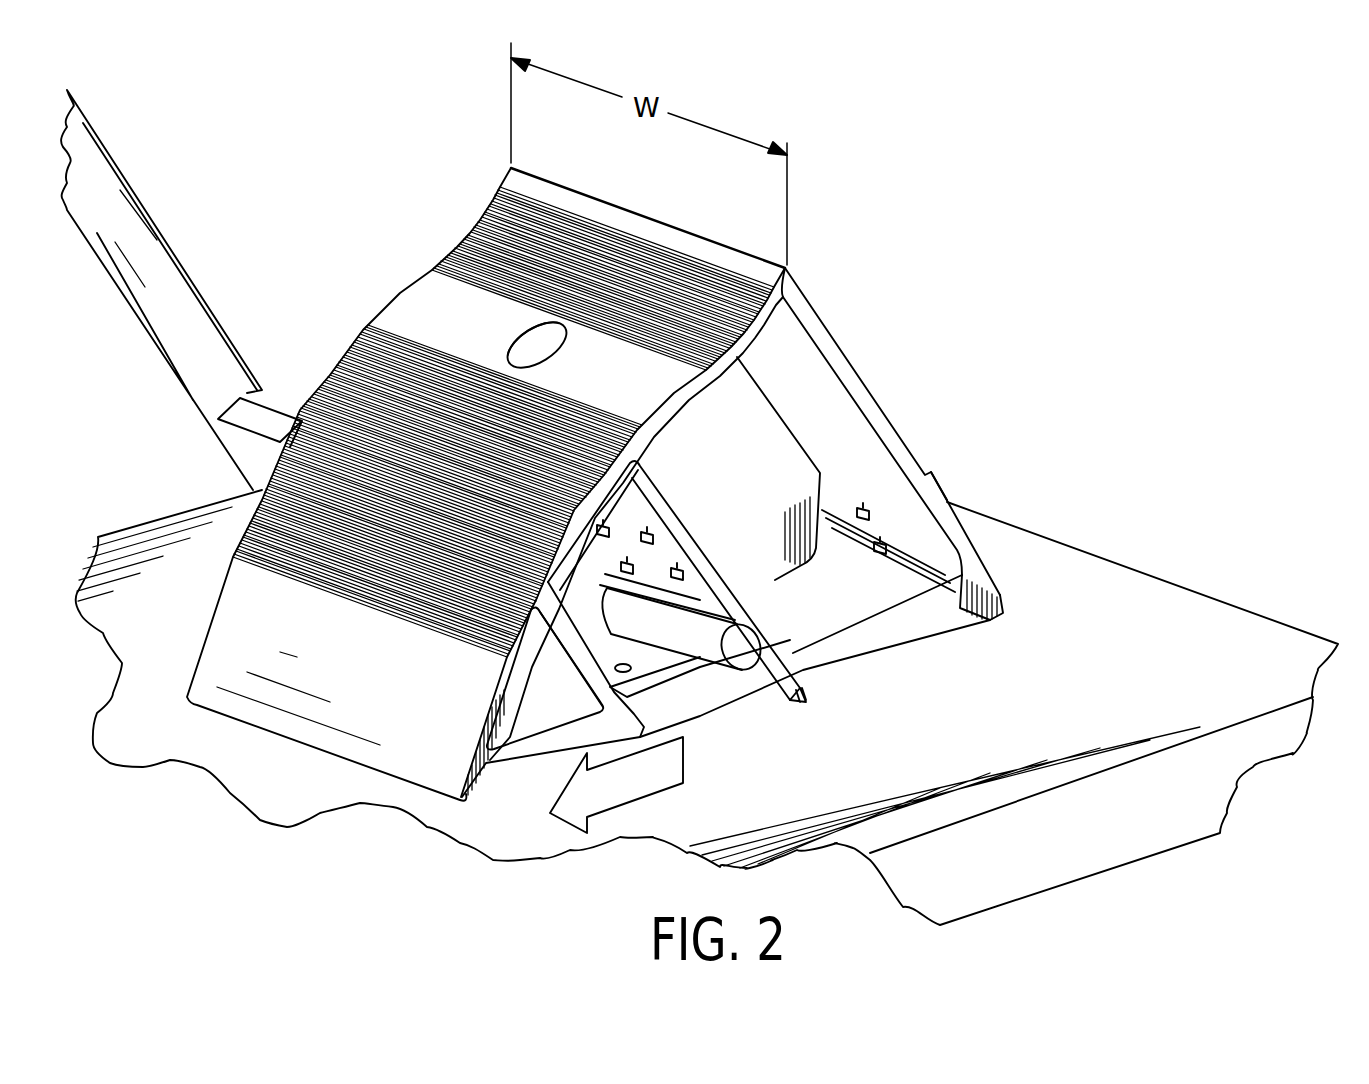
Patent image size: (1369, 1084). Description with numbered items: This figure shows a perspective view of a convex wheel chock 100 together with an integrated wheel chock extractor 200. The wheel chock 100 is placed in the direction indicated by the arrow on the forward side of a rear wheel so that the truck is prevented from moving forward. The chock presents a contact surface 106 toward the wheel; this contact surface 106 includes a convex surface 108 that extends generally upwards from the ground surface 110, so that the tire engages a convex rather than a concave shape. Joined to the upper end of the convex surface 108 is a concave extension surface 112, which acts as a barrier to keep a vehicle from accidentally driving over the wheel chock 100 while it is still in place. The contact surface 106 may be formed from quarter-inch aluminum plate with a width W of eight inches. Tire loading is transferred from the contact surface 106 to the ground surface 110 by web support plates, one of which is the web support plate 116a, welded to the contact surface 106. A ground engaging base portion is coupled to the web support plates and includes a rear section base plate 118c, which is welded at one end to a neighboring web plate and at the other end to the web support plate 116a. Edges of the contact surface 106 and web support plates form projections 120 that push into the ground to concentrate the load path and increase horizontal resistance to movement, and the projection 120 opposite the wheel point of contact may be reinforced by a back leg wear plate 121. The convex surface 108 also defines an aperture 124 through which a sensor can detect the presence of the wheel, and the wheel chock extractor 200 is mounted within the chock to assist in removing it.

The wheel chock 100 is at (900, 180).
The contact surface 106 is at (420, 160).
The convex surface 108 is at (383, 337).
The ground surface 110 is at (1147, 630).
The concave extension surface 112 is at (563, 182).
The web support plate 116a is at (872, 395).
The rear section base plate 118c is at (880, 633).
The projection 120 is at (997, 617).
The back leg wear plate 121 is at (972, 543).
The aperture 124 is at (560, 328).
The wheel chock extractor 200 is at (827, 700).